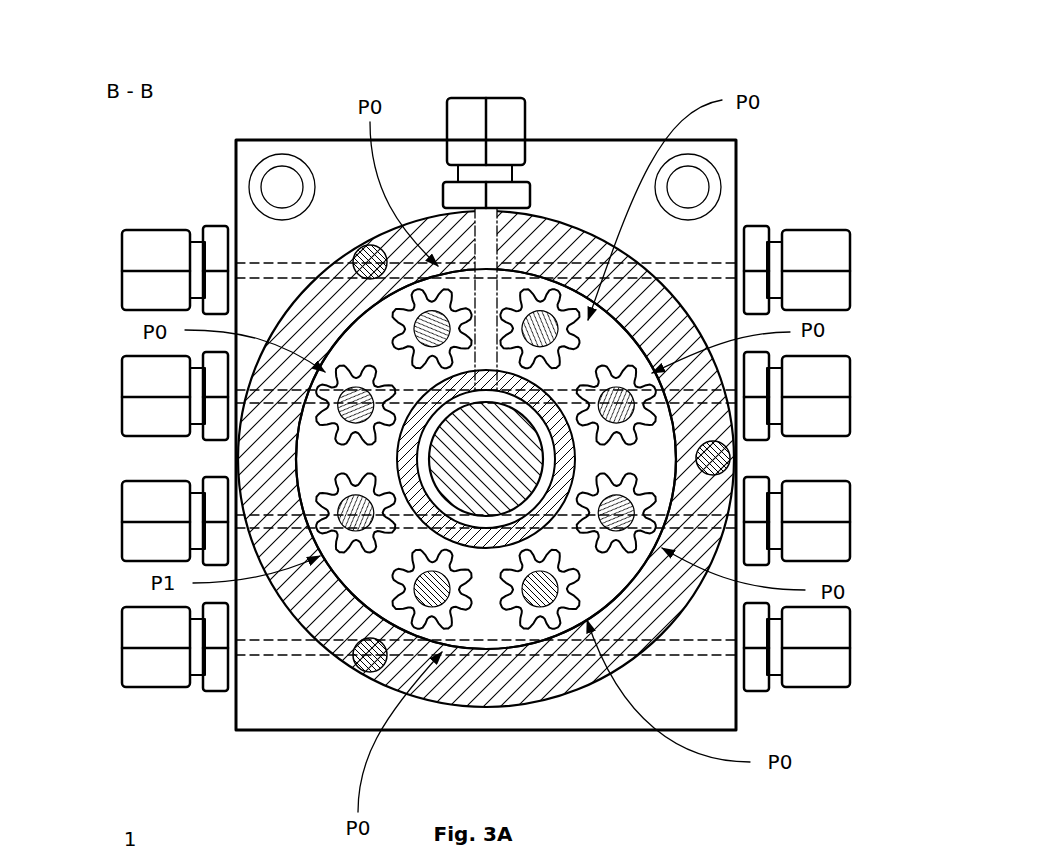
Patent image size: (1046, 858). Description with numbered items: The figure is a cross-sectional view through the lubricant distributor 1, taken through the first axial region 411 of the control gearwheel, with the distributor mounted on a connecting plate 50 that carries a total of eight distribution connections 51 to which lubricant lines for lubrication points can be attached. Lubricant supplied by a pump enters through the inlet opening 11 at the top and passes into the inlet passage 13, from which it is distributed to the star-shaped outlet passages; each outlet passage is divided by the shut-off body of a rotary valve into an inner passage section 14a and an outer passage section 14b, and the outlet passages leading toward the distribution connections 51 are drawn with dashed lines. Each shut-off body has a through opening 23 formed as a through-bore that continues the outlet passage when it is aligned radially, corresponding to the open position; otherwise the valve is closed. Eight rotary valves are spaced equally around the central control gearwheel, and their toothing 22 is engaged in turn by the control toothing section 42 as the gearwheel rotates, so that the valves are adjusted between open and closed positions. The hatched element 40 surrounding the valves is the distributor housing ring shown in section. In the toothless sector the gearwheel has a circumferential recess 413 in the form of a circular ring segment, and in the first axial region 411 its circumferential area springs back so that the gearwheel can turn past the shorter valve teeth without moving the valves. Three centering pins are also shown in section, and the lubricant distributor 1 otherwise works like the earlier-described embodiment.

The lubricant distributor 1 is at (292, 108).
The inlet opening 11 is at (488, 88).
The inlet passage 13 is at (560, 345).
The inner passage section 14a is at (432, 605).
The outer passage section 14b is at (560, 630).
The toothing 22 is at (316, 540).
The through opening 23 is at (415, 575).
The housing ring 40 is at (321, 460).
The first axial region 411 is at (413, 383).
The circumferential recess 413 is at (550, 388).
The control toothing section 42 is at (398, 546).
The connecting plate 50 is at (715, 715).
The distribution connections 51 is at (150, 252).